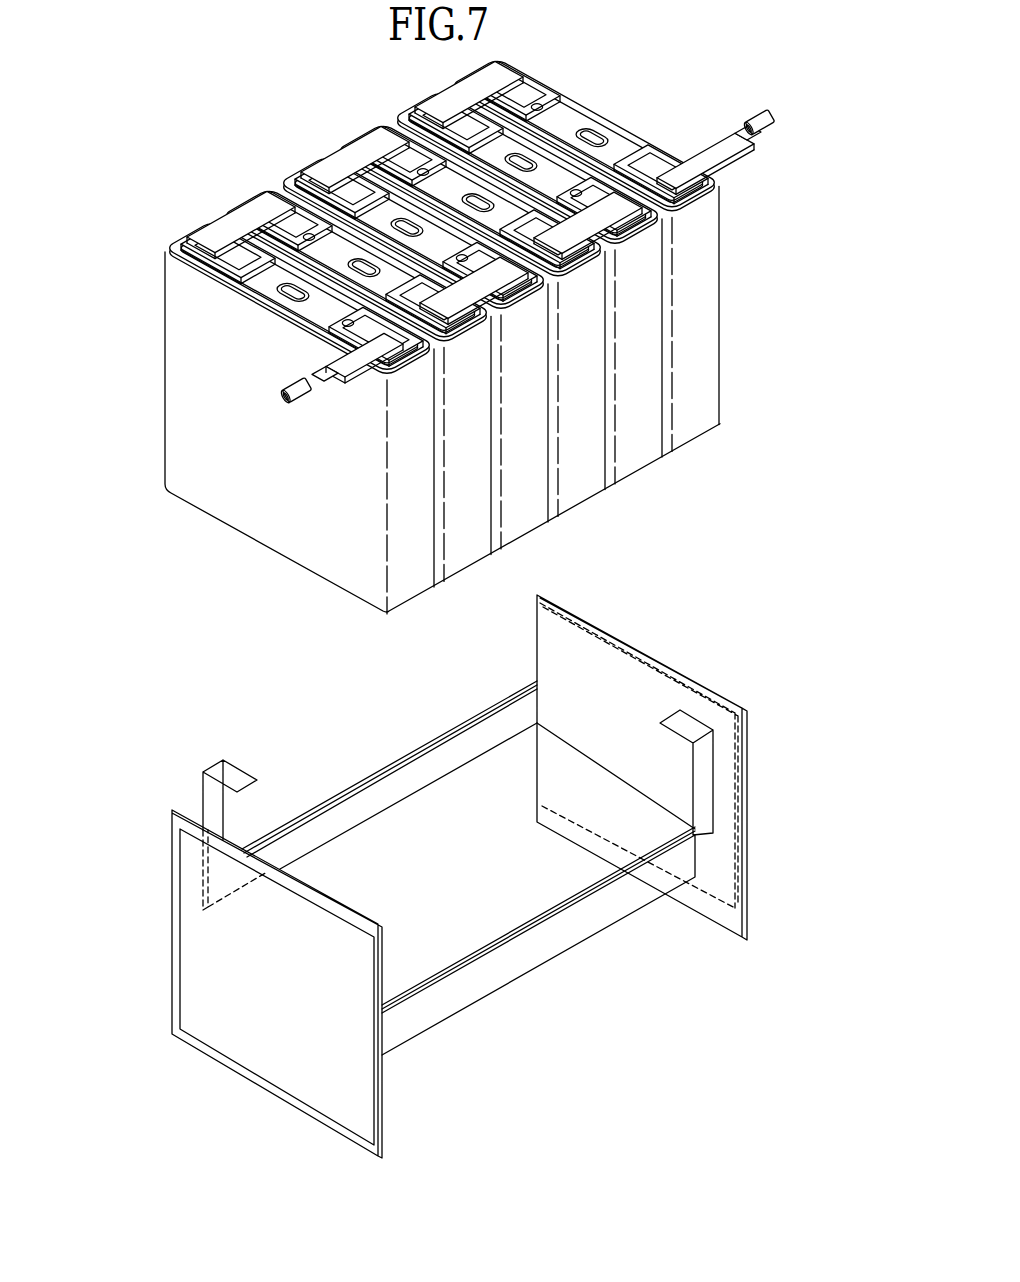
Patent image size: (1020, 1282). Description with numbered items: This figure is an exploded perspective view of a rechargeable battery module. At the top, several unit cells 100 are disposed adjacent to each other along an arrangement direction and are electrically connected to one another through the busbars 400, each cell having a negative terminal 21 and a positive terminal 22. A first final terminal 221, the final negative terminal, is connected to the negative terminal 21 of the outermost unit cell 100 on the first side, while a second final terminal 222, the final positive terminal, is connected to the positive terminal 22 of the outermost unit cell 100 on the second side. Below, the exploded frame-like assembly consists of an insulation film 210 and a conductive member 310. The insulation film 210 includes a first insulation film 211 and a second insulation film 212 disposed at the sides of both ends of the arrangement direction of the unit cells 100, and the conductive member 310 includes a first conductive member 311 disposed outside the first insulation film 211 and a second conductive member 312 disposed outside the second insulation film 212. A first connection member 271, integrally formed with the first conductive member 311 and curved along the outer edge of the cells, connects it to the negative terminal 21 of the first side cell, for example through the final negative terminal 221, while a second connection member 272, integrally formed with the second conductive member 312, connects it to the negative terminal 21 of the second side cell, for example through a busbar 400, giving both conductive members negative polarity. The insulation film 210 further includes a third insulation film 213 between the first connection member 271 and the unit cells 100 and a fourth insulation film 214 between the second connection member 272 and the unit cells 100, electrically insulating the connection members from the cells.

The unit cell 100 is at (427, 346).
The negative terminal 21 is at (395, 353).
The positive terminal 22 is at (462, 327).
The busbar 400 is at (374, 146).
The first final terminal 221 is at (702, 153).
The second final terminal 222 is at (347, 363).
The insulation film 210 is at (459, 876).
The first insulation film 211 is at (331, 896).
The second insulation film 212 is at (628, 645).
The conductive member 310 is at (462, 874).
The first conductive member 311 is at (343, 921).
The second conductive member 312 is at (655, 667).
The first connection member 271 is at (538, 941).
The second connection member 272 is at (349, 785).
The third insulation film 213 is at (527, 929).
The fourth insulation film 214 is at (413, 785).